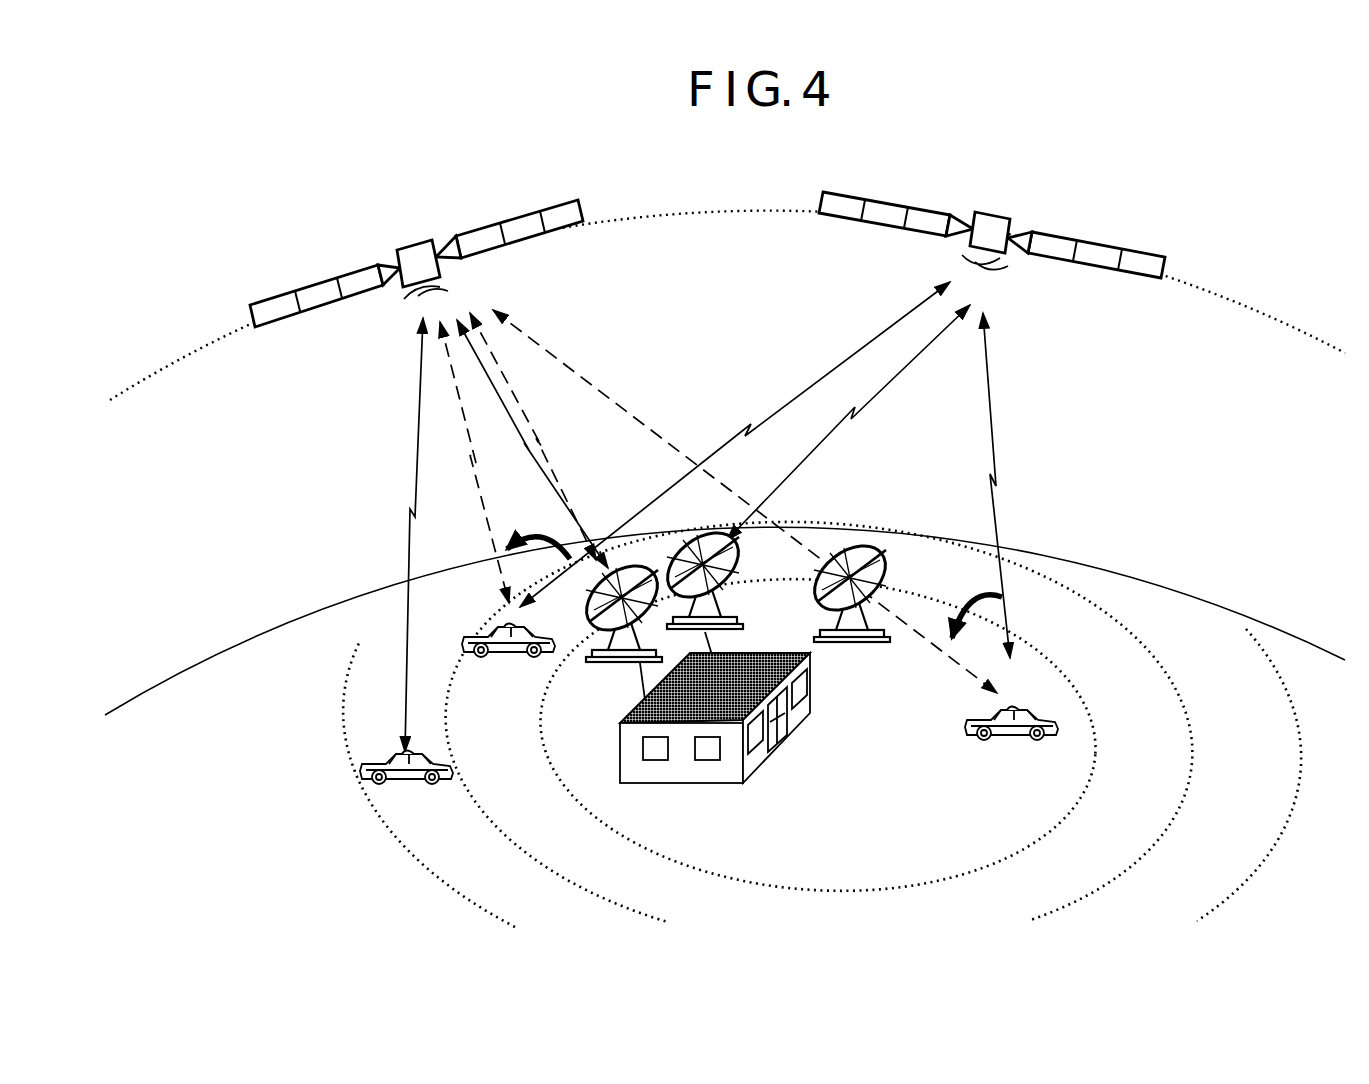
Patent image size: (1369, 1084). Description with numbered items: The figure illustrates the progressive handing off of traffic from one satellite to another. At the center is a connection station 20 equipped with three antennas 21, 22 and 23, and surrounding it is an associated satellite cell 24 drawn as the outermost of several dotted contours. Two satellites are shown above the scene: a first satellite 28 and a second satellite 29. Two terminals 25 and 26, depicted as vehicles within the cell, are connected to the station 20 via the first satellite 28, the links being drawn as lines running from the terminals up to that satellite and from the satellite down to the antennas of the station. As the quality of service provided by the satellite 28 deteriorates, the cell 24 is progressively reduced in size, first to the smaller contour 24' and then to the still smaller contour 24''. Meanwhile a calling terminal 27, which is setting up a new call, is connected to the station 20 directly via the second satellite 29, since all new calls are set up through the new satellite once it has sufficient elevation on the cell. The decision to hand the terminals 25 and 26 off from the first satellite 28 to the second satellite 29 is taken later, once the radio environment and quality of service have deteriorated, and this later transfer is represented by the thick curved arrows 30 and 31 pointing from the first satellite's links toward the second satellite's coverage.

The connection station 20 is at (793, 717).
The antenna 21 is at (600, 604).
The antenna 22 is at (738, 566).
The antenna 23 is at (884, 583).
The satellite cell 24 is at (822, 783).
The reduced satellite cell 24' is at (819, 730).
The further reduced satellite cell 24'' is at (818, 749).
The terminal 25 is at (1016, 742).
The terminal 26 is at (508, 656).
The calling terminal 27 is at (406, 782).
The first satellite 28 is at (992, 223).
The second satellite 29 is at (418, 244).
The handing-off arrow 30 is at (538, 508).
The handing-off arrow 31 is at (983, 596).